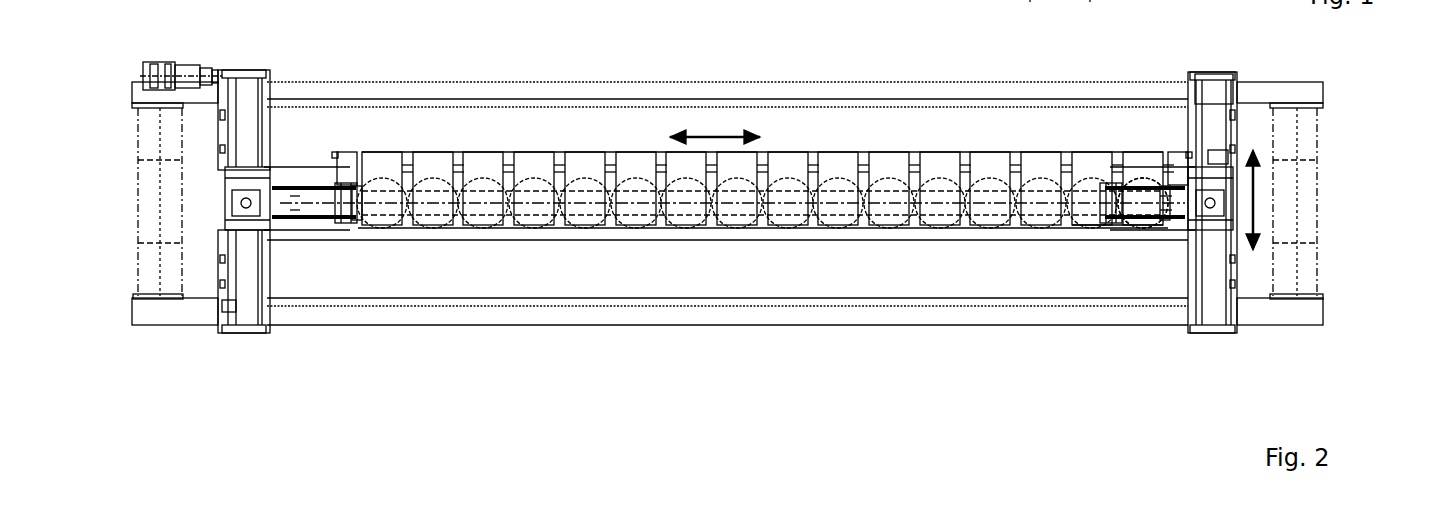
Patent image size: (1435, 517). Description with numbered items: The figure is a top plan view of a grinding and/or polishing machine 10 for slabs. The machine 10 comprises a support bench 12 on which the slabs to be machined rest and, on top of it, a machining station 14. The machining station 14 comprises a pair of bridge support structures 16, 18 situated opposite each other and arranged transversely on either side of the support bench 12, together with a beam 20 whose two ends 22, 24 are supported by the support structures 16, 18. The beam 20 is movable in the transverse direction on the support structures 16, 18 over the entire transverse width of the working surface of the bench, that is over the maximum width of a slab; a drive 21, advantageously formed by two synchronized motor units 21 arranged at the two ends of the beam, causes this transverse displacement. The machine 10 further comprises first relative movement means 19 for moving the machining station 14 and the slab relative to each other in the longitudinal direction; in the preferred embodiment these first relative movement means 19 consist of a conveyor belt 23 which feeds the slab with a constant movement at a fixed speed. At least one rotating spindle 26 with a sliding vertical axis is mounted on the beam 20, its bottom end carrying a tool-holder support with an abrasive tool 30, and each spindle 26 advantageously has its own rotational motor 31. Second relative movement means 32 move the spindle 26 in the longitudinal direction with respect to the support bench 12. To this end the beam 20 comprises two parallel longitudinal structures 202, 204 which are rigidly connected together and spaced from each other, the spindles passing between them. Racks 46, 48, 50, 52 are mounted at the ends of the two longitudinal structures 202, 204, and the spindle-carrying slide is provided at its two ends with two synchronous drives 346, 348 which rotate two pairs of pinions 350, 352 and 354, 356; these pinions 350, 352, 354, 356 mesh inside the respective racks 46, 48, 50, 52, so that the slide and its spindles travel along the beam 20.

The machine 10 is at (1020, 64).
The support bench 12 is at (1330, 142).
The machining station 14 is at (602, 134).
The bridge support structure 16 is at (243, 70).
The bridge support structure 18 is at (1220, 72).
The first relative movement means 19 is at (636, 270).
The beam 20 is at (1105, 252).
The drive 21 is at (240, 222).
The end of the beam 22 is at (250, 174).
The conveyor belt 23 is at (205, 255).
The end of the beam 24 is at (1222, 163).
The rotating spindle 26 is at (1157, 247).
The abrasive tool 30 is at (1095, 5).
The rotational motor 31 is at (761, 156).
The second relative movement means 32 is at (1236, 147).
The rack 46 is at (306, 224).
The rack 48 is at (296, 186).
The rack 50 is at (1130, 224).
The rack 52 is at (1126, 186).
The longitudinal structure 202 is at (915, 164).
The longitudinal structure 204 is at (879, 233).
The synchronous drive 346 is at (342, 168).
The synchronous drive 348 is at (1177, 152).
The pinion 350 is at (304, 217).
The pinion 352 is at (357, 185).
The pinion 354 is at (1177, 221).
The pinion 356 is at (1172, 152).